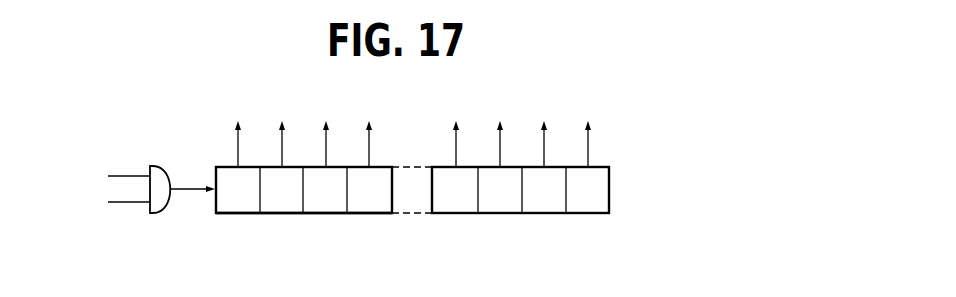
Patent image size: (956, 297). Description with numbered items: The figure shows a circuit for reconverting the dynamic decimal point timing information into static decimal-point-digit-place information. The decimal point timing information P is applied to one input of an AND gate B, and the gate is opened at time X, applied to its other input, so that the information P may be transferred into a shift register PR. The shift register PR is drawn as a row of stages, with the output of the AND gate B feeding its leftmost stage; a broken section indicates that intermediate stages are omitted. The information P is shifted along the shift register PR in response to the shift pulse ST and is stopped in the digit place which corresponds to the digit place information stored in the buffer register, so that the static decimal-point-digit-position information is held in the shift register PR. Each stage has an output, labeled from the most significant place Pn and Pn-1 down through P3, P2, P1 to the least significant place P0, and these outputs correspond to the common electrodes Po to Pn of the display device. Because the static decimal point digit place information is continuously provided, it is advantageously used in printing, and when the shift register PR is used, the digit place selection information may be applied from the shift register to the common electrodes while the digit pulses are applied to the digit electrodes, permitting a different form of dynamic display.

The AND gate B is at (166, 173).
The decimal point timing information P is at (117, 175).
The gating time signal X is at (116, 203).
The shift register PR is at (610, 193).
The shift pulse ST is at (366, 219).
The common electrode Pn is at (235, 131).
The common electrode Pn-1 is at (285, 131).
The common electrode P3 is at (452, 131).
The common electrode P2 is at (496, 131).
The common electrode P1 is at (542, 131).
The common electrode P0 is at (584, 131).